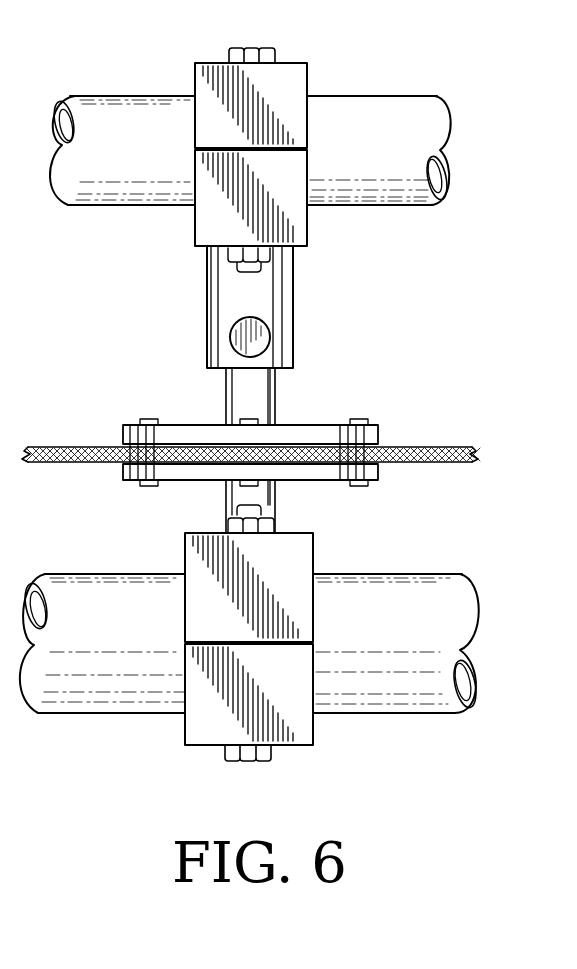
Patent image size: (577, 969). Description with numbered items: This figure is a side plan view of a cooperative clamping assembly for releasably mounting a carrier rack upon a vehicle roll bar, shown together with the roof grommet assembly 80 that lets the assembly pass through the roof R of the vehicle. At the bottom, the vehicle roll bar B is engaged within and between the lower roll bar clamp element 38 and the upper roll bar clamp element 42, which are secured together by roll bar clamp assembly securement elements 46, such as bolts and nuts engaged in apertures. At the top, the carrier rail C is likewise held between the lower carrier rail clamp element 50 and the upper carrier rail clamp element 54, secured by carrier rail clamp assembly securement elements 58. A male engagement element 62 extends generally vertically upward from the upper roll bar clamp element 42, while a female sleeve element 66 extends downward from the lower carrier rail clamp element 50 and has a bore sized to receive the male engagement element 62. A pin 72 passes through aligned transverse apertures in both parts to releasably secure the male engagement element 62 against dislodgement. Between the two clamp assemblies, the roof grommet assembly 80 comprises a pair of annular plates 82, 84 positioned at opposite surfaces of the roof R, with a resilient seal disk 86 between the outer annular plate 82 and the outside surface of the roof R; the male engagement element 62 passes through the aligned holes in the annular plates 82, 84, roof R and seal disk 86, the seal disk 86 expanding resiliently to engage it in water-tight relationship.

The lower roll bar clamp element 38 is at (198, 730).
The upper roll bar clamp element 42 is at (298, 561).
The roll bar clamp assembly securement elements 46 is at (248, 765).
The lower carrier rail clamp element 50 is at (296, 218).
The upper carrier rail clamp element 54 is at (296, 80).
The carrier rail clamp assembly securement elements 58 is at (250, 48).
The male engagement element 62 is at (260, 395).
The female sleeve element 66 is at (228, 292).
The pin 72 is at (256, 337).
The roof grommet assembly 80 is at (494, 437).
The outer annular plate 82 is at (178, 432).
The inner annular plate 84 is at (372, 470).
The seal disk 86 is at (372, 448).
The roof R is at (72, 457).
The vehicle roll bar B is at (430, 592).
The carrier rail C is at (393, 115).